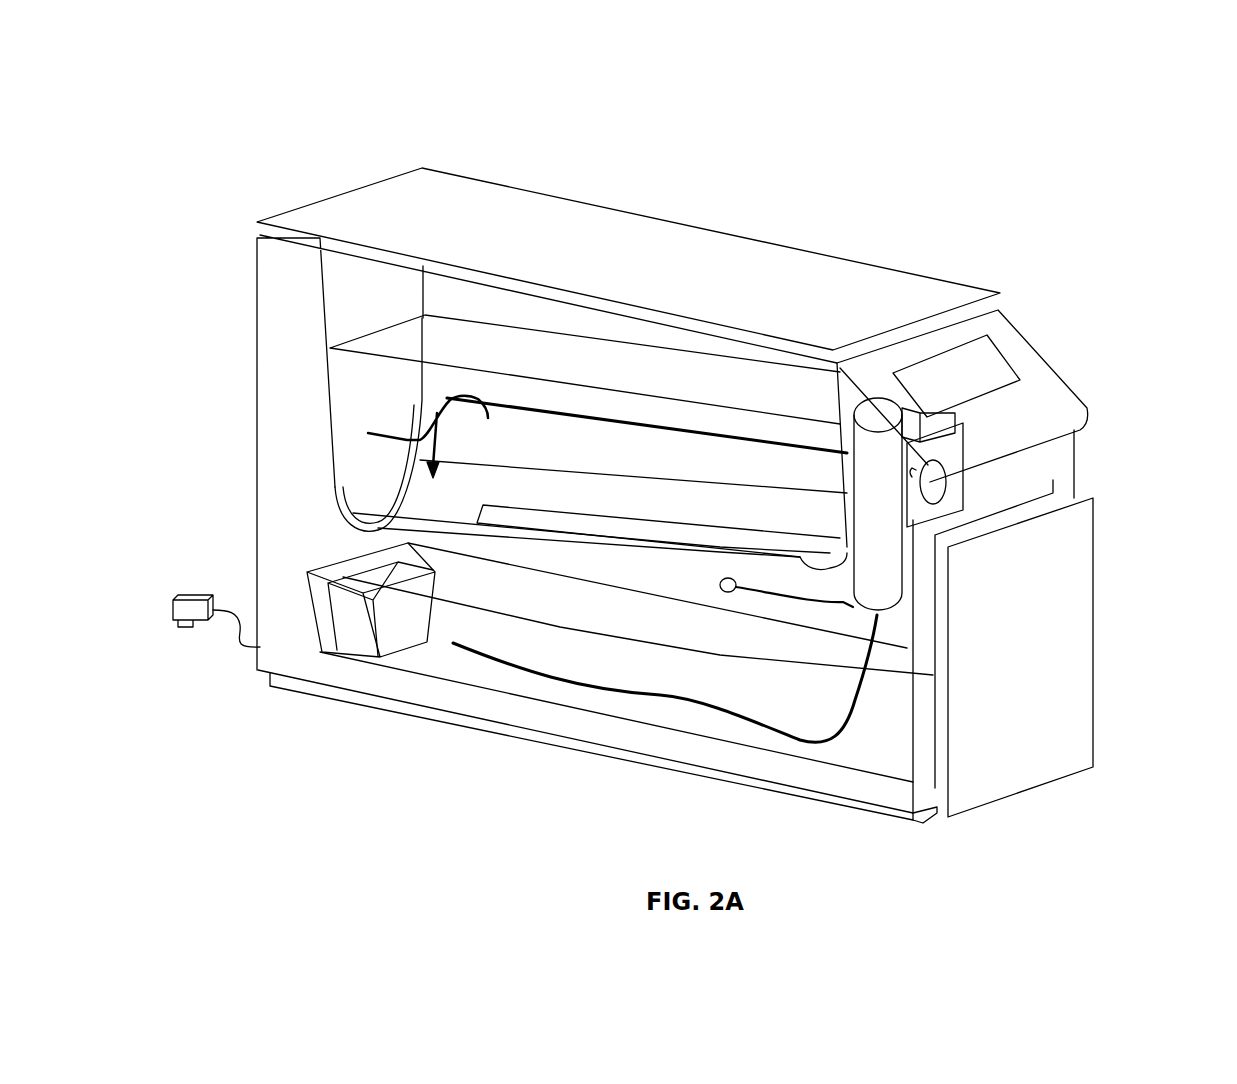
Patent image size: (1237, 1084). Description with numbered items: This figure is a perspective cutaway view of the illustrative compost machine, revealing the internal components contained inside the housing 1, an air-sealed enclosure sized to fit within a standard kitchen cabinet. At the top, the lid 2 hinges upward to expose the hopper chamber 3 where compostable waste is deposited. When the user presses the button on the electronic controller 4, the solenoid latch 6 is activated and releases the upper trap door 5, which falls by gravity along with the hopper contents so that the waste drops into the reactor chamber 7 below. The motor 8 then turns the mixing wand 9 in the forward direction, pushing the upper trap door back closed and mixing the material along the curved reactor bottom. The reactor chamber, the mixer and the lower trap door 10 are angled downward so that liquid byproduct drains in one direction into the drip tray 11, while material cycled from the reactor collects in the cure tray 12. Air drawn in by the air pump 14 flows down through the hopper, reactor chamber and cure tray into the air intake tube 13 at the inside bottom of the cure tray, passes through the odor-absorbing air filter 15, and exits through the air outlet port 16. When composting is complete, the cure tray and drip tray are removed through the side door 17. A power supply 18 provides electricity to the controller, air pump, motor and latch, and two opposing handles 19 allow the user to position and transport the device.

The housing 1 is at (283, 333).
The lid 2 is at (347, 202).
The hopper chamber 3 is at (510, 310).
The electronic controller 4 is at (990, 365).
The upper trap door 5 is at (588, 350).
The solenoid latch 6 is at (932, 420).
The reactor chamber 7 is at (655, 450).
The motor 8 is at (900, 442).
The mixing wand 9 is at (372, 432).
The lower trap door 10 is at (780, 515).
The drip tray 11 is at (407, 618).
The cure tray 12 is at (567, 707).
The air intake tube 13 is at (723, 707).
The air pump 14 is at (950, 562).
The air filter 15 is at (875, 590).
The air outlet port 16 is at (740, 588).
The side door 17 is at (1043, 768).
The power supply 18 is at (192, 627).
The handles 19 is at (1032, 432).